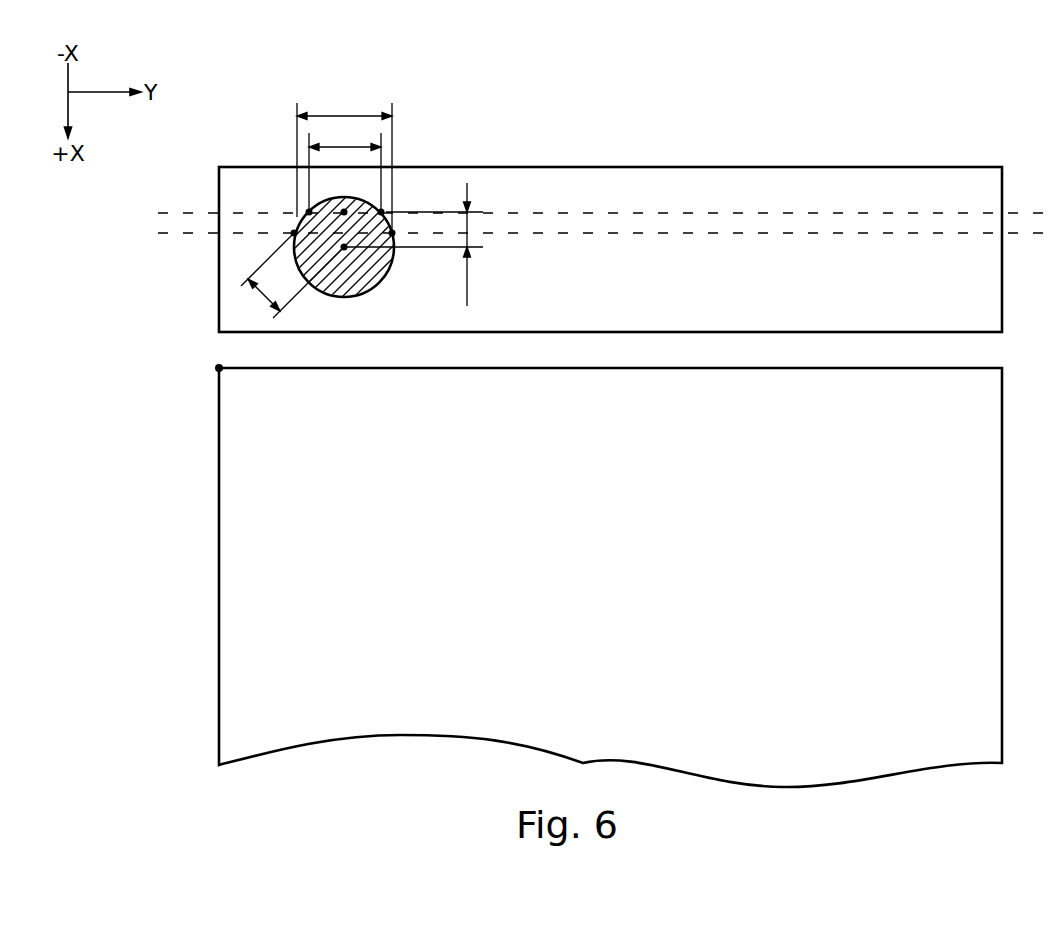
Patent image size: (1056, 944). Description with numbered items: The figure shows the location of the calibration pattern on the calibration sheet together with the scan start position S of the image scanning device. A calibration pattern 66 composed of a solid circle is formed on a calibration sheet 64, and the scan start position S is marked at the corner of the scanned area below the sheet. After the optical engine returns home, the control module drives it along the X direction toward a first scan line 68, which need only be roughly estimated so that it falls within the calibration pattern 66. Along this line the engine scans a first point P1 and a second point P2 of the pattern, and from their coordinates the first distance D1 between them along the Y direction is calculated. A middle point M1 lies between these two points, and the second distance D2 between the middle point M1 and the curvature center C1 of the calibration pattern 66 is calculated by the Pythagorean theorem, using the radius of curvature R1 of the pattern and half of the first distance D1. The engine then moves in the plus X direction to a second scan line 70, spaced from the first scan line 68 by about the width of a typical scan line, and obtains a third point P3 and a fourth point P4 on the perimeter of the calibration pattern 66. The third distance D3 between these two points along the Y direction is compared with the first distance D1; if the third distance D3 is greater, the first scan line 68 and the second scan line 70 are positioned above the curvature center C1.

The calibration sheet 64 is at (859, 167).
The calibration pattern 66 is at (396, 286).
The first scan line 68 is at (588, 213).
The second scan line 70 is at (588, 233).
The scan start position S is at (210, 359).
The first point P1 is at (309, 211).
The second point P2 is at (381, 211).
The third point P3 is at (294, 233).
The fourth point P4 is at (392, 233).
The middle point M1 is at (344, 211).
The curvature center C1 is at (344, 247).
The first distance D1 is at (345, 167).
The second distance D2 is at (413, 244).
The third distance D3 is at (344, 162).
The radius of curvature R1 is at (292, 275).